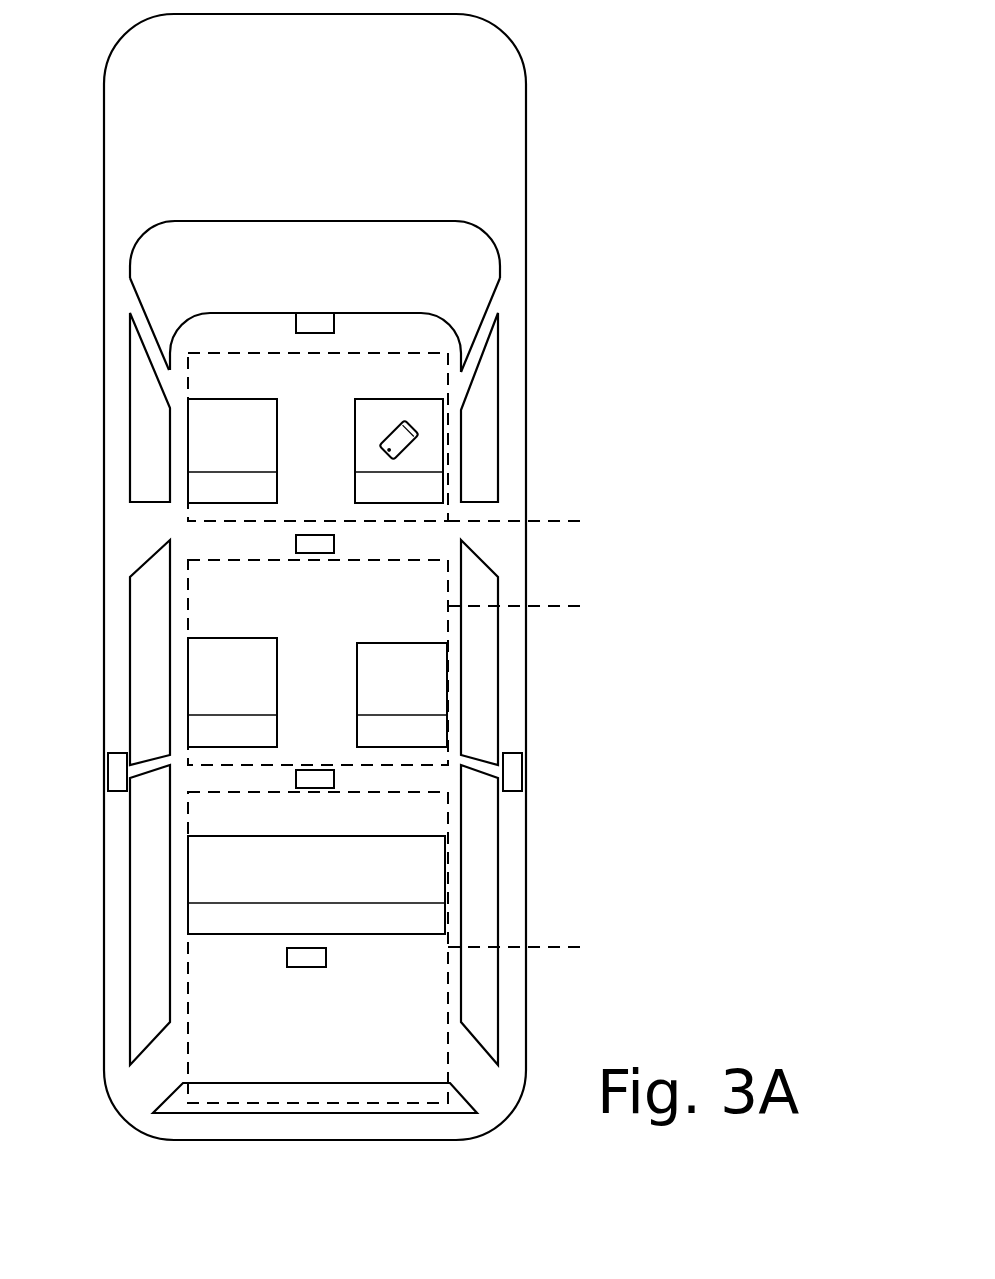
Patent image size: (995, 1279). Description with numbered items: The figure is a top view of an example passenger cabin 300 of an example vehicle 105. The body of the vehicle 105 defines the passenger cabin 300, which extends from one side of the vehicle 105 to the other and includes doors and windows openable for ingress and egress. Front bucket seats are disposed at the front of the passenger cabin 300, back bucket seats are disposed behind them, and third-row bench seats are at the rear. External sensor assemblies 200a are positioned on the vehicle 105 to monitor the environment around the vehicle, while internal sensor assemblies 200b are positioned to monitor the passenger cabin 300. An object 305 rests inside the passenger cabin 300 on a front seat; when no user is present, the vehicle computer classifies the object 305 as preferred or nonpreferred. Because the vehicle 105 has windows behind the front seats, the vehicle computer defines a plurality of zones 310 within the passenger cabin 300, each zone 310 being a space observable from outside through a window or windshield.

The vehicle 105 is at (527, 125).
The passenger cabin 300 is at (390, 328).
The object 305 is at (421, 432).
The zone 310 is at (625, 531).
The external sensor assembly 200a is at (108, 790).
The internal sensor assembly 200b is at (363, 279).